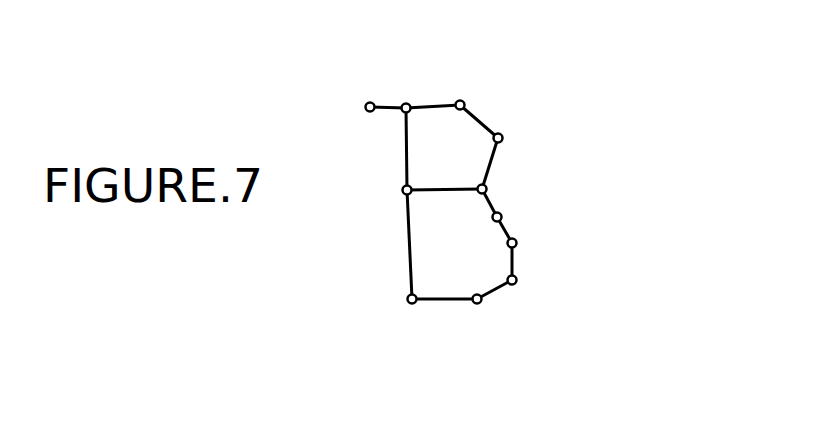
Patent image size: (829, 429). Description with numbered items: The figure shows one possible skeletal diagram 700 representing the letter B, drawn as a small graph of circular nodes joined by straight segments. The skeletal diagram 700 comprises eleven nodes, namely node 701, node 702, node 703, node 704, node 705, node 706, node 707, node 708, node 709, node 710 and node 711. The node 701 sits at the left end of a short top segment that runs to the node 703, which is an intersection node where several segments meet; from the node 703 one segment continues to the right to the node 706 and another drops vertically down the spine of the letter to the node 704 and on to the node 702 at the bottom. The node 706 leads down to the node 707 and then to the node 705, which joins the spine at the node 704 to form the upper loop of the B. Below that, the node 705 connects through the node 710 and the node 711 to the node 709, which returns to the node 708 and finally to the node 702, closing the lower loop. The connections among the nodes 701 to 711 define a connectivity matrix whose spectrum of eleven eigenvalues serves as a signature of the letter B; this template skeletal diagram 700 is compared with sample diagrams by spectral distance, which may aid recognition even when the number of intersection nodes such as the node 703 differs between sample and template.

The skeletal diagram 700 is at (587, 320).
The node 701 is at (366, 104).
The node 702 is at (408, 302).
The intersection node 703 is at (408, 104).
The node 704 is at (403, 190).
The node 705 is at (487, 188).
The node 706 is at (464, 103).
The node 707 is at (503, 138).
The node 708 is at (481, 302).
The node 709 is at (517, 280).
The node 710 is at (502, 216).
The node 711 is at (517, 243).